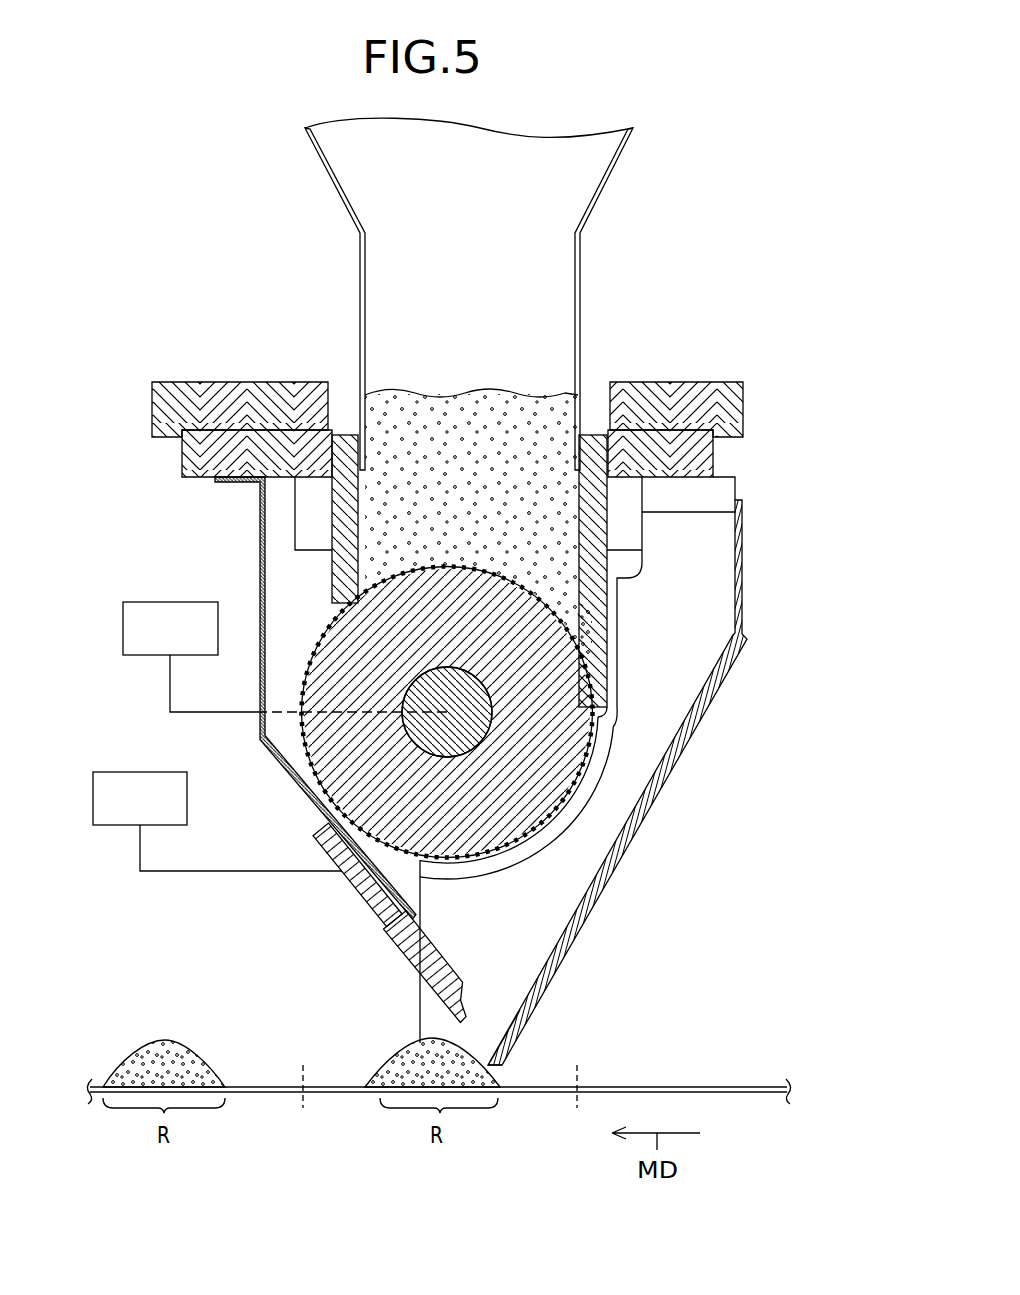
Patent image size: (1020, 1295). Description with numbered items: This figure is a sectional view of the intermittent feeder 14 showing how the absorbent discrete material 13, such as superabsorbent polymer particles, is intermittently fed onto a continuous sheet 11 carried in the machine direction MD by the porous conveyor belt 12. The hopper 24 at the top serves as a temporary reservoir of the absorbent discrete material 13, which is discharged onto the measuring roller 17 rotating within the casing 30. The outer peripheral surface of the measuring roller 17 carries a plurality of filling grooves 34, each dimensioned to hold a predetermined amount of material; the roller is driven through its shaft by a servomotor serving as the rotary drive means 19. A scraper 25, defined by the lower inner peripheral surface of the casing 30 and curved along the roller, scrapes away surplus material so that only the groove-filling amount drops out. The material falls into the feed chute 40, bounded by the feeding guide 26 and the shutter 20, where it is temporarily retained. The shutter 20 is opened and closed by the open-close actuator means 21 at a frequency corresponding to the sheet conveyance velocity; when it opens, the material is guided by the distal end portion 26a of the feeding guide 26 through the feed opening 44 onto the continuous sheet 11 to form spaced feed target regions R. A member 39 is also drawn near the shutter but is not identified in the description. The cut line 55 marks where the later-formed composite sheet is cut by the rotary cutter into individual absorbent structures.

The intermittent feeder 14 is at (689, 153).
The hopper 24 is at (553, 277).
The absorbent discrete material 13 is at (548, 396).
The casing 30 is at (597, 531).
The filling grooves 34 is at (322, 633).
The scraper 25 is at (593, 676).
The rotary drive means 19 is at (143, 602).
The open-close actuator means 21 is at (112, 772).
The measuring roller 17 is at (558, 770).
The scraper 39 is at (400, 862).
The shutter 20 is at (388, 908).
The feed opening 44 is at (472, 1034).
The feeding guide 26 is at (562, 950).
The distal end portion of the feeding guide 26a is at (500, 1063).
The feed chute 40 is at (497, 998).
The continuous sheet 11 is at (747, 1083).
The conveyor belt 12 is at (723, 1094).
The cut line 55 is at (302, 1108).